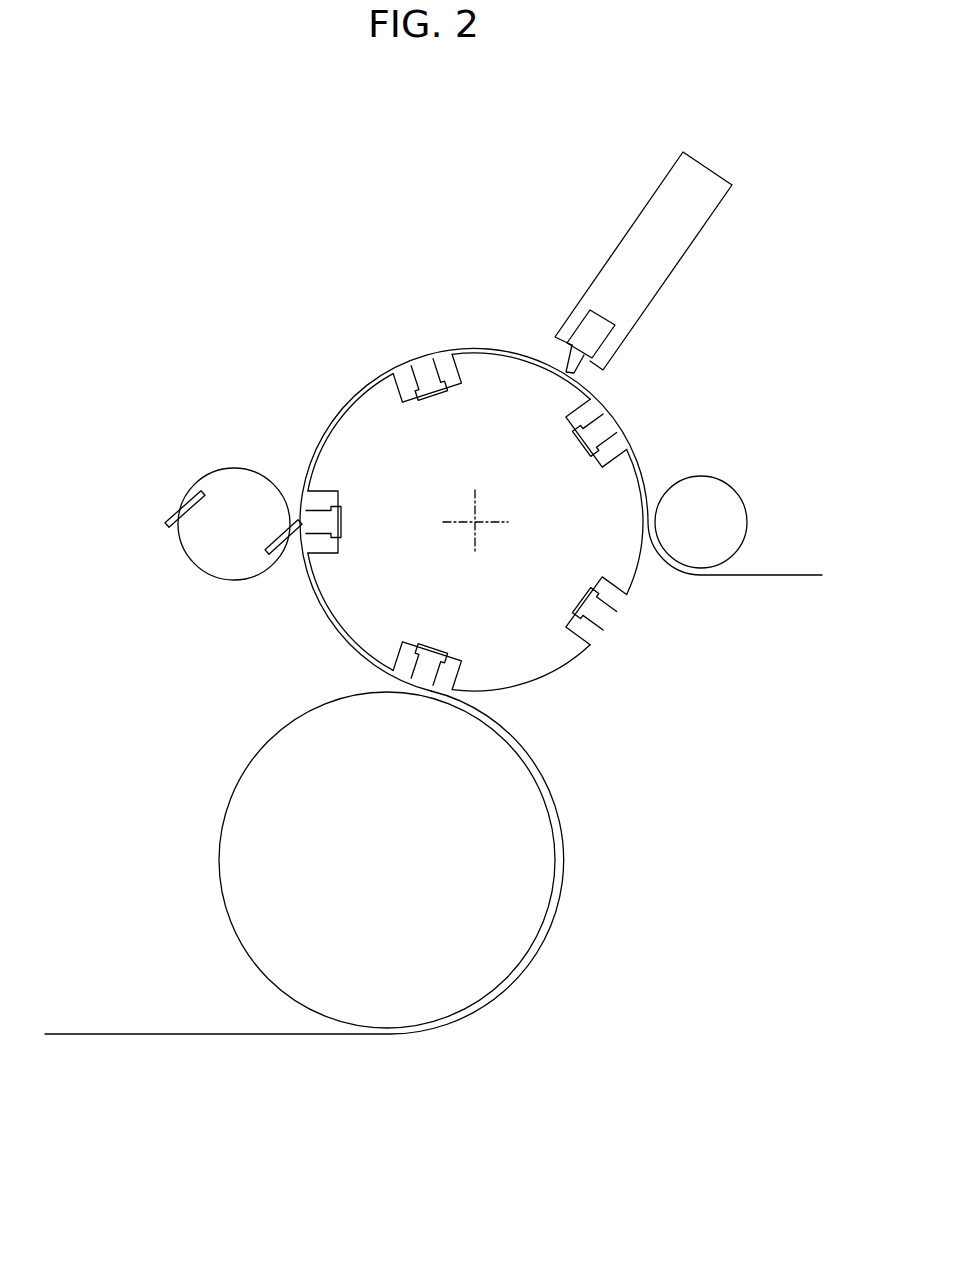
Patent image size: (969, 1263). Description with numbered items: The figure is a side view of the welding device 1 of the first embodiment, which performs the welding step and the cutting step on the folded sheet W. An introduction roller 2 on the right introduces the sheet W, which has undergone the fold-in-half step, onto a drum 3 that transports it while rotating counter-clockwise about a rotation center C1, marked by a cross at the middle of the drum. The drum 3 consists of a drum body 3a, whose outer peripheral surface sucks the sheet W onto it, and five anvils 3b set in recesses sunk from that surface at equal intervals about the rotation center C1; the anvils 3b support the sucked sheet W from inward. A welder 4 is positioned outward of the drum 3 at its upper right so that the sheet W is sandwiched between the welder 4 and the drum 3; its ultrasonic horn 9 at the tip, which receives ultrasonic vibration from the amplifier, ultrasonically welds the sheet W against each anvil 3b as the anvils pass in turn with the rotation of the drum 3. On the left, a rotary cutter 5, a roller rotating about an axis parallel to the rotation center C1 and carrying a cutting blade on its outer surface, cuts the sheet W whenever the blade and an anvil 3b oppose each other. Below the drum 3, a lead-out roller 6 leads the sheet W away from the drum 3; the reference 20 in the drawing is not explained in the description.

The welding device 1 is at (282, 203).
The introduction roller 2 is at (740, 488).
The drum 3 is at (653, 418).
The drum body 3a is at (485, 375).
The anvil 3b is at (433, 397).
The welder 4 is at (652, 168).
The rotary cutter 5 is at (218, 460).
The lead-out roller 6 is at (195, 840).
The ultrasonic horn 9 is at (592, 328).
The transport belt 20 is at (560, 840).
The sheet W is at (765, 577).
The rotation center C1 is at (478, 520).